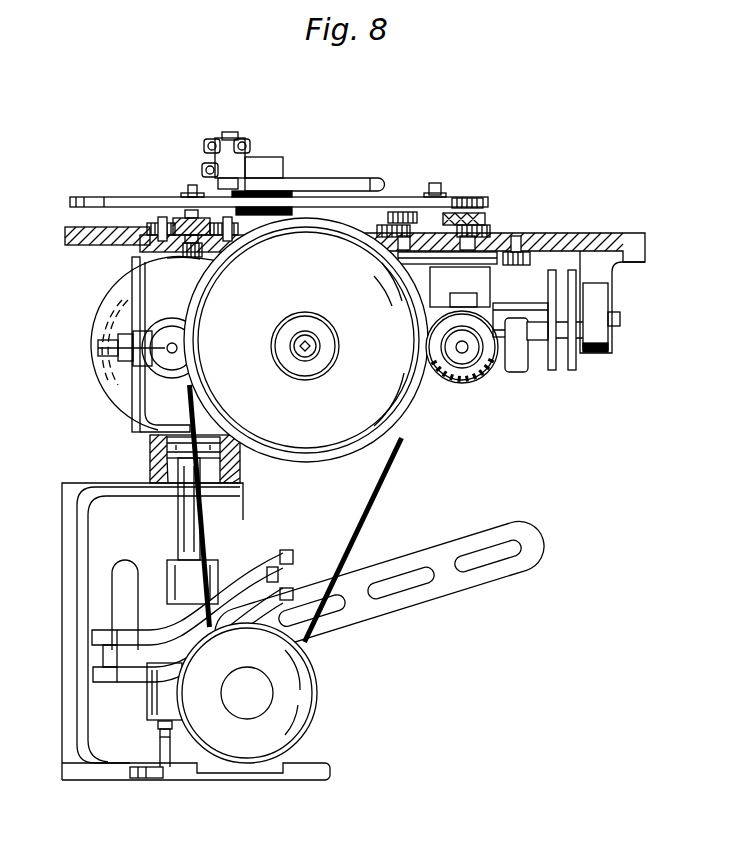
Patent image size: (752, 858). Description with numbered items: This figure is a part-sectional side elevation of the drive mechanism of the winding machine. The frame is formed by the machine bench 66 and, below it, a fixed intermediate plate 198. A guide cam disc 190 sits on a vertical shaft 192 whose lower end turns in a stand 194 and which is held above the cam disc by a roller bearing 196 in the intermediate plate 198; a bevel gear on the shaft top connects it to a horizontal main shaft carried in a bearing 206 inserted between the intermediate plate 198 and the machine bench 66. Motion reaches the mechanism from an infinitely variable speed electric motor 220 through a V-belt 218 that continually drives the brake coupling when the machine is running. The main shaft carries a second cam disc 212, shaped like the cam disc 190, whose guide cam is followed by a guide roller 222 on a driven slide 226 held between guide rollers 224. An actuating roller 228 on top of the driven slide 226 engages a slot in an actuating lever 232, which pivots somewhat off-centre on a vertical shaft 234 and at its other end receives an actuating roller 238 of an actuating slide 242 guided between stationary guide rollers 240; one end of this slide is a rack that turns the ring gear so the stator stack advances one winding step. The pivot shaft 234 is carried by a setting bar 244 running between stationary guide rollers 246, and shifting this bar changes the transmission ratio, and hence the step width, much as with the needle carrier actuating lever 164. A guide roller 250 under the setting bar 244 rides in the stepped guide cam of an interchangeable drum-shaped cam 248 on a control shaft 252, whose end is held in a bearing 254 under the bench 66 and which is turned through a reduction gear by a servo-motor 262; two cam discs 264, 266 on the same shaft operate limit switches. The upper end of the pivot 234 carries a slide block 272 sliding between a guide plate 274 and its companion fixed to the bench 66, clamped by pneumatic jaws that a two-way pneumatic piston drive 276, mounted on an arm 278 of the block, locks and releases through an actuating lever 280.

The machine bench 66 is at (76, 246).
The actuating lever 164 is at (430, 590).
The guide cam disc 190 is at (290, 550).
The vertical shaft 192 is at (188, 538).
The stand 194 is at (160, 768).
The roller bearing 196 is at (172, 450).
The intermediate plate 198 is at (158, 474).
The bearing 206 is at (136, 389).
The second cam disc 212 is at (97, 331).
The V-belt 218 is at (370, 503).
The infinitely variable speed electric motor 220 is at (303, 705).
The guide roller 222 is at (167, 258).
The guide rollers 224 is at (156, 222).
The driven slide 226 is at (185, 218).
The actuating roller 228 is at (192, 185).
The actuating lever 232 is at (80, 197).
The vertical shaft 234 is at (288, 209).
The actuating roller 238 is at (436, 183).
The stationary guide rollers 240 is at (487, 225).
The actuating slide 242 is at (452, 213).
The setting bar 244 is at (491, 264).
The stationary guide rollers 246 is at (530, 253).
The drum-shaped cam 248 is at (462, 300).
The guide roller 250 is at (380, 237).
The control shaft 252 is at (537, 341).
The bearing 254 is at (598, 333).
The servo-motor 262 is at (460, 368).
The cam disc 264 is at (572, 370).
The cam disc 266 is at (553, 370).
The slide block 272 is at (272, 208).
The guide plate 274 is at (362, 183).
The two-way pneumatic piston drive 276 is at (237, 138).
The arm 278 is at (253, 160).
The actuating lever 280 is at (225, 133).